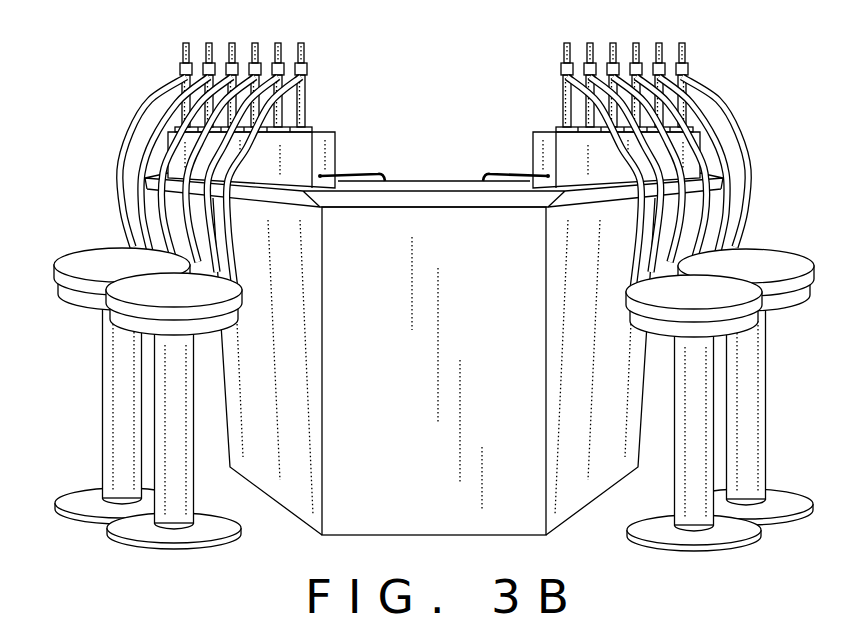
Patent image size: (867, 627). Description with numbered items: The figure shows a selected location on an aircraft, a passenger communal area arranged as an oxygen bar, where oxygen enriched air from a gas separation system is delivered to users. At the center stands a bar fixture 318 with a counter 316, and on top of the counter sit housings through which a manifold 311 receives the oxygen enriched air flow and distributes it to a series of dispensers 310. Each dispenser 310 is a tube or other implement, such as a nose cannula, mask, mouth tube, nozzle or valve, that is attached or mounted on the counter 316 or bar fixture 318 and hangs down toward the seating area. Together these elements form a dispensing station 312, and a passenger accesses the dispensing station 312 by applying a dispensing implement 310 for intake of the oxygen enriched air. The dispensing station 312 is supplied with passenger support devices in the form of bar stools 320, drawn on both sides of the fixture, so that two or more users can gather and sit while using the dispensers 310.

The dispenser 310 is at (722, 107).
The manifold 311 is at (530, 148).
The dispensing station 312 is at (684, 43).
The counter 316 is at (717, 162).
The bar fixture 318 is at (518, 266).
The bar stool 320 is at (117, 258).